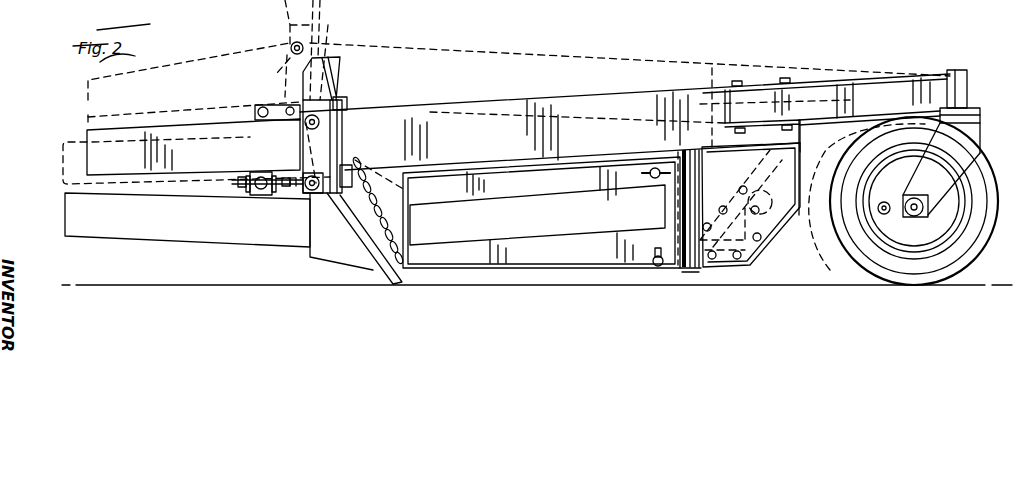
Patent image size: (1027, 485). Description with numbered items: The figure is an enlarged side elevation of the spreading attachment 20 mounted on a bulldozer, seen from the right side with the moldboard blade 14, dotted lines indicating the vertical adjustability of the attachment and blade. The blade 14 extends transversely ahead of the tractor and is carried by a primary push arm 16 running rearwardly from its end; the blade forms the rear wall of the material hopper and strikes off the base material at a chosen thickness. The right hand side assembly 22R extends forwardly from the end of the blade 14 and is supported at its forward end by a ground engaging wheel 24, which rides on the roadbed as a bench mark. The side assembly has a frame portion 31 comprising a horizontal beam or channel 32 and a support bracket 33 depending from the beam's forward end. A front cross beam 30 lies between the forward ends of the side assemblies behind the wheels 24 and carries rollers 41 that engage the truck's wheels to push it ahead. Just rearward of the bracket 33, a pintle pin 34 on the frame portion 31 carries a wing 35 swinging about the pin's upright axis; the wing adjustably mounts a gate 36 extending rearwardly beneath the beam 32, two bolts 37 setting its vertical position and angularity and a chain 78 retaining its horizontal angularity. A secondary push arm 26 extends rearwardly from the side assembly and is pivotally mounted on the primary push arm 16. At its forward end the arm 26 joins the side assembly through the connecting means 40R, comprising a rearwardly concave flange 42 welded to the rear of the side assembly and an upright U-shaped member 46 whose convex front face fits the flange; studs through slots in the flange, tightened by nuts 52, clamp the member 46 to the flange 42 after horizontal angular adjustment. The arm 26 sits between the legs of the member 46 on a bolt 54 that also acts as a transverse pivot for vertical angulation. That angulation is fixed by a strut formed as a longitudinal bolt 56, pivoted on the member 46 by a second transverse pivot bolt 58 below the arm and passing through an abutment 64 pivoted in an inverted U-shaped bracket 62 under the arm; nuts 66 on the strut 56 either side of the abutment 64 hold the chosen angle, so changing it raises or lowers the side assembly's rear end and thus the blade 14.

The moldboard blade 14 is at (320, 5).
The primary blade mounting push arm 16 is at (63, 172).
The spreading attachment 20 is at (472, 66).
The right hand side assembly 22R is at (489, 98).
The ground engaging wheel 24 is at (862, 268).
The secondary push arm 26 is at (86, 96).
The front cross beam 30 is at (707, 277).
The frame portion 31 is at (404, 104).
The beam or channel 32 is at (500, 151).
The support bracket 33 is at (791, 154).
The pintle pin 34 is at (686, 177).
The wing 35 is at (677, 264).
The gate 36 is at (481, 262).
The bolts 37 is at (658, 254).
The connecting means 40R is at (240, 137).
The rollers 41 is at (750, 208).
The rearwardly concave flange 42 is at (346, 128).
The U-shaped upright member 46 is at (300, 146).
The nut 52 is at (349, 103).
The bolt 54 is at (308, 100).
The strut bolt 56 is at (240, 184).
The second transverse pivot bolt 58 is at (308, 196).
The inverted U-shaped bracket 62 is at (258, 170).
The abutment 64 is at (262, 198).
The nuts 66 is at (248, 196).
The chain 78 is at (385, 218).